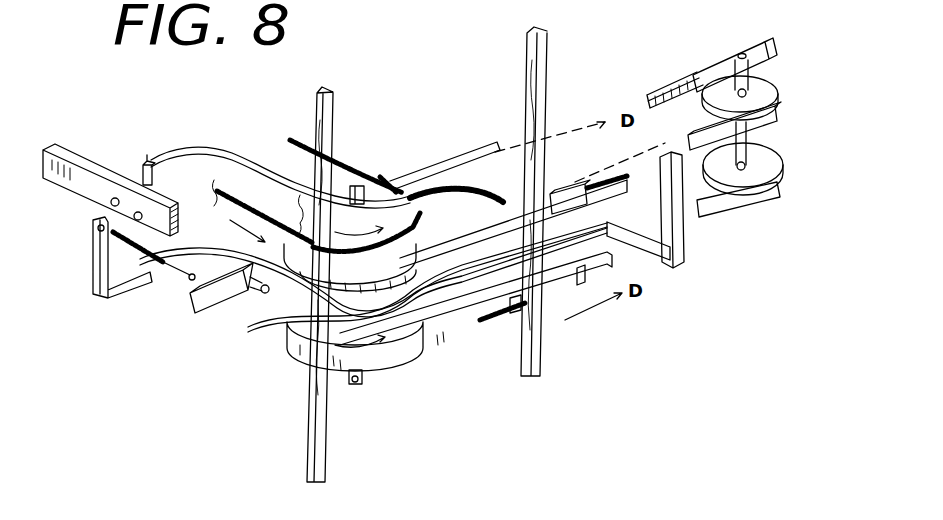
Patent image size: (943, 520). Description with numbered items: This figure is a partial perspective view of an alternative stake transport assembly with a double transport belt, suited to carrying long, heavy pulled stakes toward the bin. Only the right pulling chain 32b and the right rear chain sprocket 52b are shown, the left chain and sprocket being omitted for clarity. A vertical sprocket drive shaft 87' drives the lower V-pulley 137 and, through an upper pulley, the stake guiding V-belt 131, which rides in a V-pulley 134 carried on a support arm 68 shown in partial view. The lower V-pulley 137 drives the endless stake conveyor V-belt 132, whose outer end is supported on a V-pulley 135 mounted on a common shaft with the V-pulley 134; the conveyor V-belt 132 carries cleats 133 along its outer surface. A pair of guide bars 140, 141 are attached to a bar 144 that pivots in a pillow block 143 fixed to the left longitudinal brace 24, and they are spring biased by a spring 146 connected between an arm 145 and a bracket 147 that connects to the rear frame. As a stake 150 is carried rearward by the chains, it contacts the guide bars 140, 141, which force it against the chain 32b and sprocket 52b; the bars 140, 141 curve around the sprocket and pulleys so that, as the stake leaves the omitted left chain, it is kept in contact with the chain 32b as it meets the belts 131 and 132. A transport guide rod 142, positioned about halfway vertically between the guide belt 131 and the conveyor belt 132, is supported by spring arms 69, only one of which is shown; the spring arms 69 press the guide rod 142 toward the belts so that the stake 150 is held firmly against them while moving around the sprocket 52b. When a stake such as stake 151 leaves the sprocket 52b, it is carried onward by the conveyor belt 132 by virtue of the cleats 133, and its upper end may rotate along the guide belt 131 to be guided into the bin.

The left longitudinal brace 24 is at (92, 190).
The right pulling chain 32b is at (352, 174).
The right rear chain sprocket 52b is at (383, 187).
The support arm 68 is at (717, 68).
The spring arm 69 is at (688, 237).
The vertical sprocket drive shaft 87' is at (362, 397).
The stake guiding V-belt 131 is at (553, 200).
The stake conveyor V-belt 132 is at (445, 338).
The cleats 133 is at (515, 312).
The V-pulley 134 is at (763, 92).
The V-pulley 135 is at (763, 163).
The lower V-pulley 137 is at (385, 347).
The guide bar 140 is at (253, 157).
The guide bar 141 is at (240, 231).
The transport guide rod 142 is at (280, 324).
The pillow block 143 is at (215, 190).
The bar 144 is at (147, 165).
The arm 145 is at (93, 252).
The spring 146 is at (165, 270).
The bracket 147 is at (193, 306).
The stake 150 is at (328, 93).
The stake 151 is at (548, 69).